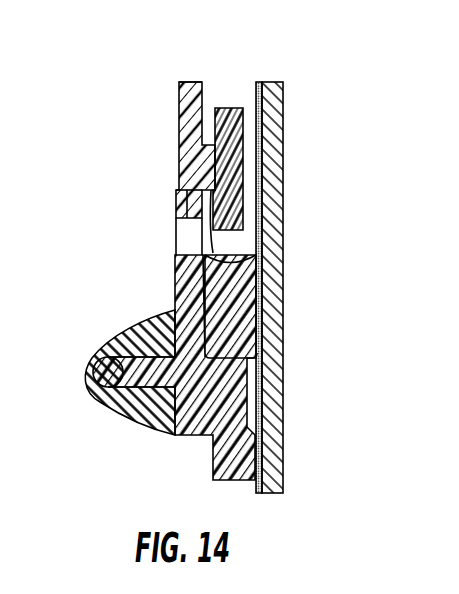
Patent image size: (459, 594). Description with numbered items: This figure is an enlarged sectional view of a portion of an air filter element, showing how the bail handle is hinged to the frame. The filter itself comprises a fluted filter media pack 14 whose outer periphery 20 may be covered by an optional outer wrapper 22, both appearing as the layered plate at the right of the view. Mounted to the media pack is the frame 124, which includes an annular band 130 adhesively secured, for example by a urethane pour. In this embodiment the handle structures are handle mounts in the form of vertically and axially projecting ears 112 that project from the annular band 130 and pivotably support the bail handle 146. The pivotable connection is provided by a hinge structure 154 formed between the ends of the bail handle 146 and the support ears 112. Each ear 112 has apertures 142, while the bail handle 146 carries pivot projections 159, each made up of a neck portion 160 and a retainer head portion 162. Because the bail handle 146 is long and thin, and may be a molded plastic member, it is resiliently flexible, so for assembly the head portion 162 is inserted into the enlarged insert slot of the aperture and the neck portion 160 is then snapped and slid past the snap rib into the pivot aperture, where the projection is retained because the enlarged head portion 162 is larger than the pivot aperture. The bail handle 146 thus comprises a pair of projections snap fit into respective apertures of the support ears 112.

The fluted filter media pack 14 is at (284, 256).
The outer periphery 20 is at (262, 187).
The outer wrapper 22 is at (256, 88).
The ears 112 is at (152, 124).
The frame 124 is at (183, 451).
The annular band 130 is at (190, 84).
The apertures 142 is at (177, 238).
The bail handle 146 is at (222, 162).
The hinge structure 154 is at (195, 143).
The pivot projections 159 is at (185, 172).
The neck portion 160 is at (245, 217).
The retainer head portion 162 is at (178, 183).